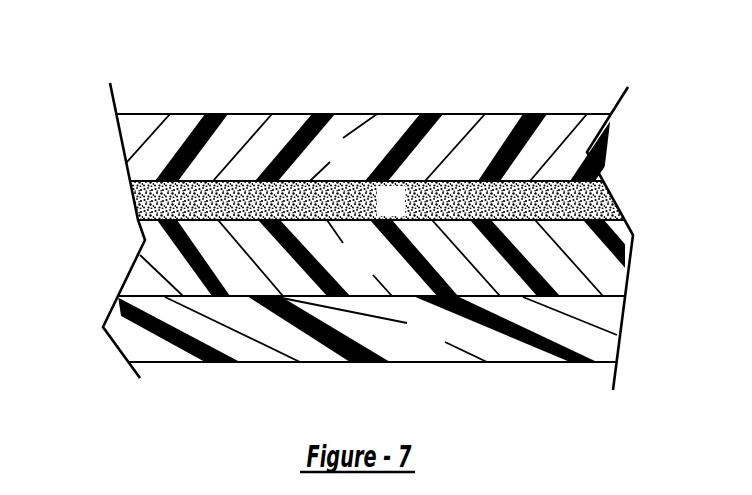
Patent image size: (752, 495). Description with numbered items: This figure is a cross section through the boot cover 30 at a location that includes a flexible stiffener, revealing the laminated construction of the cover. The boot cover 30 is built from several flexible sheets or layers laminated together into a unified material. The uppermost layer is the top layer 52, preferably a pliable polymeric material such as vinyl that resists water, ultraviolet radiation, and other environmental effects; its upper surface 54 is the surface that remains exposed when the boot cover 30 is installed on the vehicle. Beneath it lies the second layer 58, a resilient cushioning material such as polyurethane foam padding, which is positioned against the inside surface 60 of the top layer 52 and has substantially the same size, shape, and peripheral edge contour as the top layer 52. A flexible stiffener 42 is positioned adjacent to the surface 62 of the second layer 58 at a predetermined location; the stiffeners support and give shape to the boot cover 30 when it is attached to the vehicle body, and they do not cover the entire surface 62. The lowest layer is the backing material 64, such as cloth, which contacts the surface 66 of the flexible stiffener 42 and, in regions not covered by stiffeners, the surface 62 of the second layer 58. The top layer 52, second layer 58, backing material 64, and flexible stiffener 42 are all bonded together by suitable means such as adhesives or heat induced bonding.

The boot cover 30 is at (261, 113).
The upper surface 54 is at (400, 112).
The top layer 52 is at (359, 159).
The second layer 58 is at (401, 214).
The inside surface 60 is at (187, 182).
The surface of second layer 62 is at (570, 213).
The flexible stiffener 42 is at (368, 266).
The surface of flexible stiffener 66 is at (190, 300).
The backing material 64 is at (432, 346).